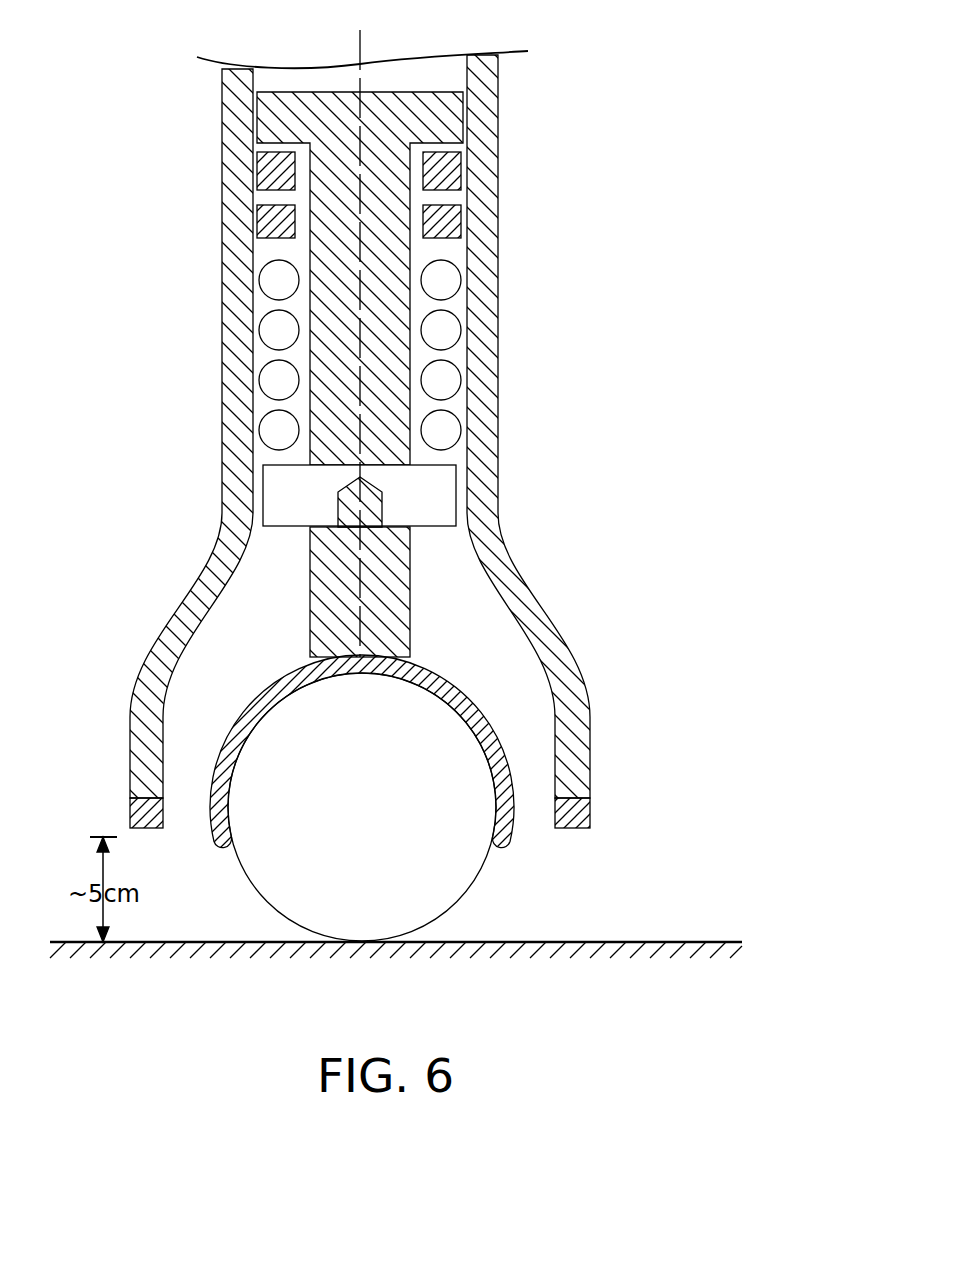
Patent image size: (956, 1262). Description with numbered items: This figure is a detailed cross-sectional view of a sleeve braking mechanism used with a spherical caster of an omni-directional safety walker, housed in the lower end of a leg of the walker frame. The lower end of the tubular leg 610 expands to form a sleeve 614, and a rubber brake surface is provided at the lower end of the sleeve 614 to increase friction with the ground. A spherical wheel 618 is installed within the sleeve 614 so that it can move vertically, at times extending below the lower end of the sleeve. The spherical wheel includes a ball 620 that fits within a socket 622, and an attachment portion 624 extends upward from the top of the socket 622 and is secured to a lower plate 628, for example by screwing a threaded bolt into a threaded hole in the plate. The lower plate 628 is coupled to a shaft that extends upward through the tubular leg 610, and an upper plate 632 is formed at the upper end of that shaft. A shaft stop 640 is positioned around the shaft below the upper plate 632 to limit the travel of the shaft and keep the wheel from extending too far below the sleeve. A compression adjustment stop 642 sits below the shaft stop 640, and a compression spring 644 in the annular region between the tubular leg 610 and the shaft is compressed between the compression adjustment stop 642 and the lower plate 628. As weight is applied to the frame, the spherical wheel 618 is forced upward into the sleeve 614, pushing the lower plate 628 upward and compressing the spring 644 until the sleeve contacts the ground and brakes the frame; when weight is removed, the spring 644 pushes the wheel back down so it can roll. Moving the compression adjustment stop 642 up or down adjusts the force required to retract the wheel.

The tubular leg 610 is at (498, 345).
The sleeve 614 is at (130, 715).
The spherical wheel 618 is at (218, 865).
The ball 620 is at (263, 895).
The socket 622 is at (257, 698).
The attachment portion 624 is at (310, 580).
The lower plate 628 is at (438, 528).
The upper plate 632 is at (452, 90).
The shaft stop 640 is at (463, 170).
The compression adjustment stop 642 is at (463, 222).
The compression spring 644 is at (458, 268).